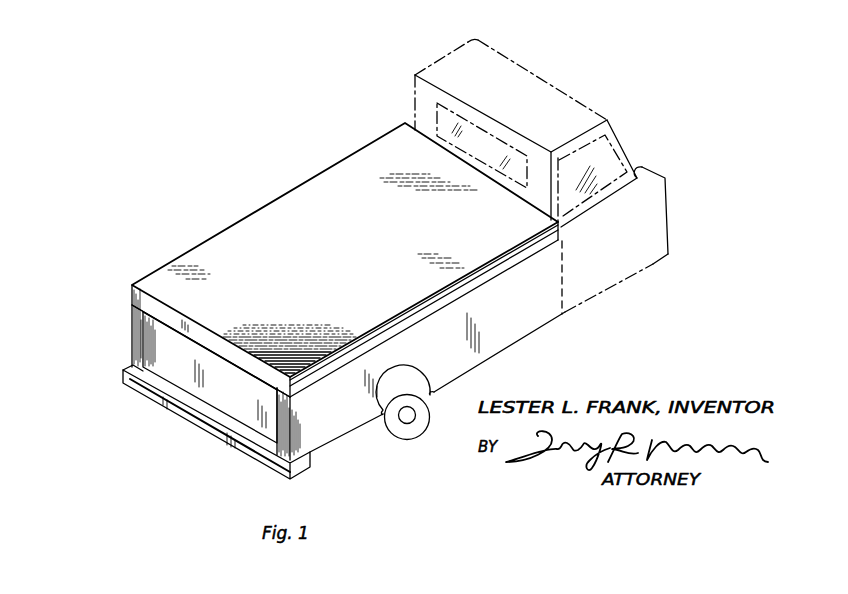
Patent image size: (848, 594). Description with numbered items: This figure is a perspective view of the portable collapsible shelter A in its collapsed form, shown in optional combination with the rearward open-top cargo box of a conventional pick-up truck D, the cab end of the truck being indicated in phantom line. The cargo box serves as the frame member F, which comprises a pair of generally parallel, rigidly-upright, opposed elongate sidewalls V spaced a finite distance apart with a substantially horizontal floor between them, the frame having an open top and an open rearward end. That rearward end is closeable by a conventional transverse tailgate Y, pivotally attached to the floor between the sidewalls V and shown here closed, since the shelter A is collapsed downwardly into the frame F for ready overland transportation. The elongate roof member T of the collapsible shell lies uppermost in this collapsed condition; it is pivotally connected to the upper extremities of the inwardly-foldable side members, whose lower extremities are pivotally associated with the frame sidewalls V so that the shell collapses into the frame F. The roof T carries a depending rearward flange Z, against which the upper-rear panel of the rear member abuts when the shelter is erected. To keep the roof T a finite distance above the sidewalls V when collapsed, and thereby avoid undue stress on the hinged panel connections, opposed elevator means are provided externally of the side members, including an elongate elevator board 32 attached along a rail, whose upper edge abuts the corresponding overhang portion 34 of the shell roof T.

The collapsible shelter A is at (271, 201).
The roof member T is at (345, 230).
The rearward flange Z is at (207, 336).
The tailgate Y is at (225, 385).
The elevator board 32 is at (350, 363).
The overhang portion 34 is at (423, 300).
The sidewall V is at (465, 367).
The frame member F is at (523, 343).
The pick-up truck D is at (635, 272).